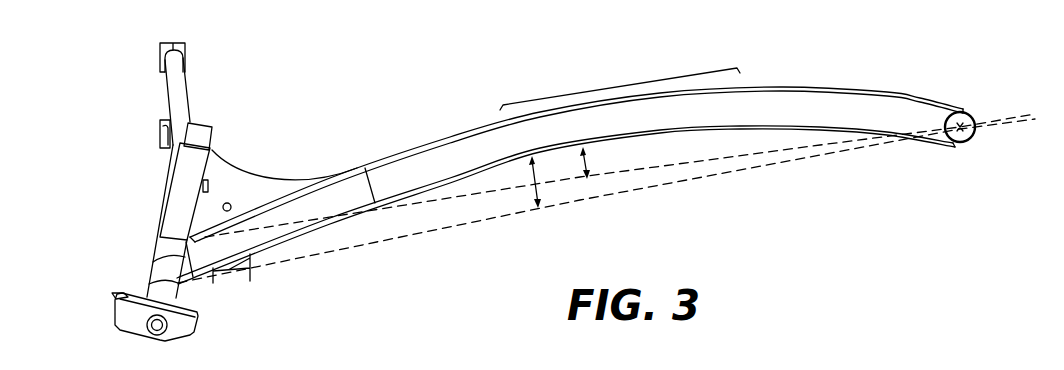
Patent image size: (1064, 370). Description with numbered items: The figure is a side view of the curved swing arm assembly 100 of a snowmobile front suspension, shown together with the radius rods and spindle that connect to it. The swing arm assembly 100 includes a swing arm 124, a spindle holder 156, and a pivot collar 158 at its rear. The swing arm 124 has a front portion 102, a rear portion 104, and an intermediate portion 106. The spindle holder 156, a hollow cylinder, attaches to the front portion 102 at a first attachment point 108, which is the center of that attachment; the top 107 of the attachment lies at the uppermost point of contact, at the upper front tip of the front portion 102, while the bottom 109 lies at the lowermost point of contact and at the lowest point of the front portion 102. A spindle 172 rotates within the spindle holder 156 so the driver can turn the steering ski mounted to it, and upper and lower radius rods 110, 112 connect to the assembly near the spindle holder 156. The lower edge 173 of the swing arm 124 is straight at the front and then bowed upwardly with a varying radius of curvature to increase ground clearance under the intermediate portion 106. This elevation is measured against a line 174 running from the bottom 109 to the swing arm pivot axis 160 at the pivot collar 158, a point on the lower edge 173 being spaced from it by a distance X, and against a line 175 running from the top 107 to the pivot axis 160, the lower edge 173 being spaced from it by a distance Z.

The swing arm assembly 100 is at (605, 152).
The front portion 102 is at (207, 202).
The rear portion 104 is at (985, 107).
The intermediate portion 106 is at (608, 87).
The top of the attachment 107 is at (170, 218).
The first attachment point 108 is at (168, 258).
The bottom of the attachment 109 is at (150, 281).
The upper radius rod 110 is at (182, 92).
The lower radius rod 112 is at (165, 165).
The swing arm 124 is at (452, 153).
The spindle holder 156 is at (168, 180).
The pivot collar 158 is at (972, 138).
The swing arm pivot axis 160 is at (962, 124).
The spindle 172 is at (135, 328).
The lower edge 173 is at (657, 133).
The line 174 is at (329, 251).
The line 175 is at (420, 202).
The distance x X is at (530, 180).
The distance z Z is at (589, 164).